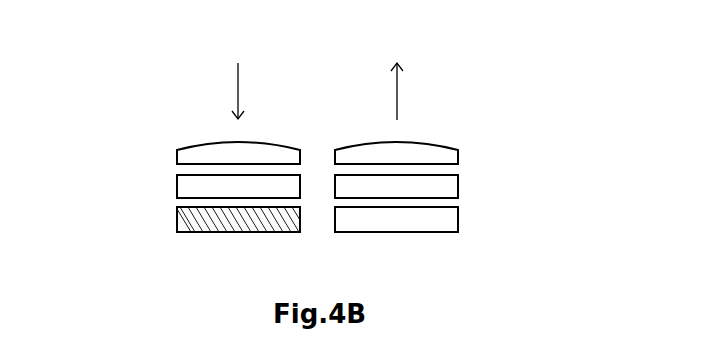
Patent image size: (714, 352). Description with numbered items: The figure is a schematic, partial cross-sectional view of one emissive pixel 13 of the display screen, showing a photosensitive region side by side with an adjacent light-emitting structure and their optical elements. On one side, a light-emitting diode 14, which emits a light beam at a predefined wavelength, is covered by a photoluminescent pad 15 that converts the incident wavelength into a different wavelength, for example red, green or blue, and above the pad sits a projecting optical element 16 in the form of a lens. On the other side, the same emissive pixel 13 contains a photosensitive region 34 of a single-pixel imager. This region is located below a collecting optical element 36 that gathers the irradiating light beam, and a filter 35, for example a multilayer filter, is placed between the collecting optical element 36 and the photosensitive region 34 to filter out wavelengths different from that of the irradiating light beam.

The emissive pixel 13 is at (318, 100).
The light-emitting diode 14 is at (460, 218).
The photoluminescent pad 15 is at (460, 186).
The projecting optical element 16 is at (460, 152).
The photosensitive region 34 is at (177, 218).
The filter 35 is at (177, 186).
The collecting optical element 36 is at (177, 152).